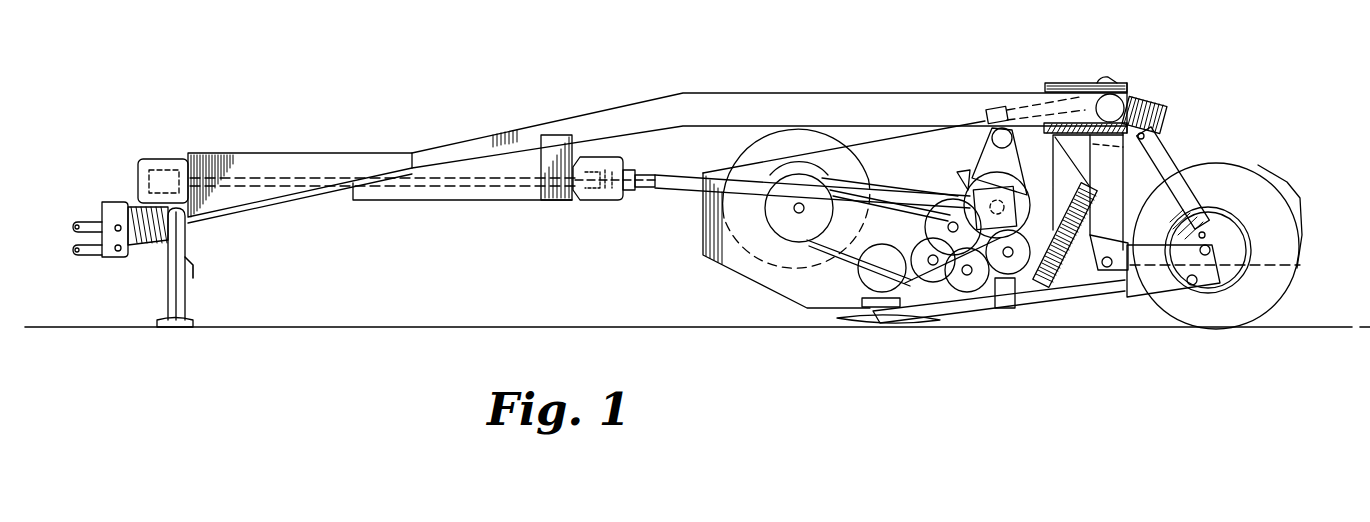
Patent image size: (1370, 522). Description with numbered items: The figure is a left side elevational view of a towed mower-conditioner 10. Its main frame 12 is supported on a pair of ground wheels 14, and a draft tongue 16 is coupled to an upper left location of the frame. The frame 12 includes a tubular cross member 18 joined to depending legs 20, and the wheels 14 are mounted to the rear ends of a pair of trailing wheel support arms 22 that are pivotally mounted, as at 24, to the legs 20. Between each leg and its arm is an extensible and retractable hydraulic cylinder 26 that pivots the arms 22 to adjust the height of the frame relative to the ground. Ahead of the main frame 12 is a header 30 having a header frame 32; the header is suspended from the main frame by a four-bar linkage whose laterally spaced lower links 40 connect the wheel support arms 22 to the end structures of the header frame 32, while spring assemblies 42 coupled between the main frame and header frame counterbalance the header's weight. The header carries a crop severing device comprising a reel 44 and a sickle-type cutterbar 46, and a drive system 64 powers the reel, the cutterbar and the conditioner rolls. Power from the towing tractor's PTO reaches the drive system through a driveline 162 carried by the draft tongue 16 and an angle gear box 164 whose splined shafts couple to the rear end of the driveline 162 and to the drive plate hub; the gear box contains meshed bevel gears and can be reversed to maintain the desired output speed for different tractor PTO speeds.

The mower-conditioner 10 is at (420, 80).
The main frame 12 is at (1108, 193).
The ground wheels 14 is at (1298, 280).
The draft tongue 16 is at (615, 105).
The tubular cross member 18 is at (1092, 52).
The depending legs 20 is at (1137, 170).
The trailing wheel support arms 22 is at (1165, 285).
The pivotal mounting 24 is at (1105, 274).
The hydraulic cylinder 26 is at (1192, 208).
The header 30 is at (692, 233).
The header frame 32 is at (756, 291).
The lower links 40 is at (1060, 318).
The spring assemblies 42 is at (1172, 120).
The reel 44 is at (745, 150).
The sickle-type cutterbar 46 is at (826, 318).
The drive system 64 is at (918, 176).
The driveline 162 is at (655, 190).
The angle gear box 164 is at (972, 173).